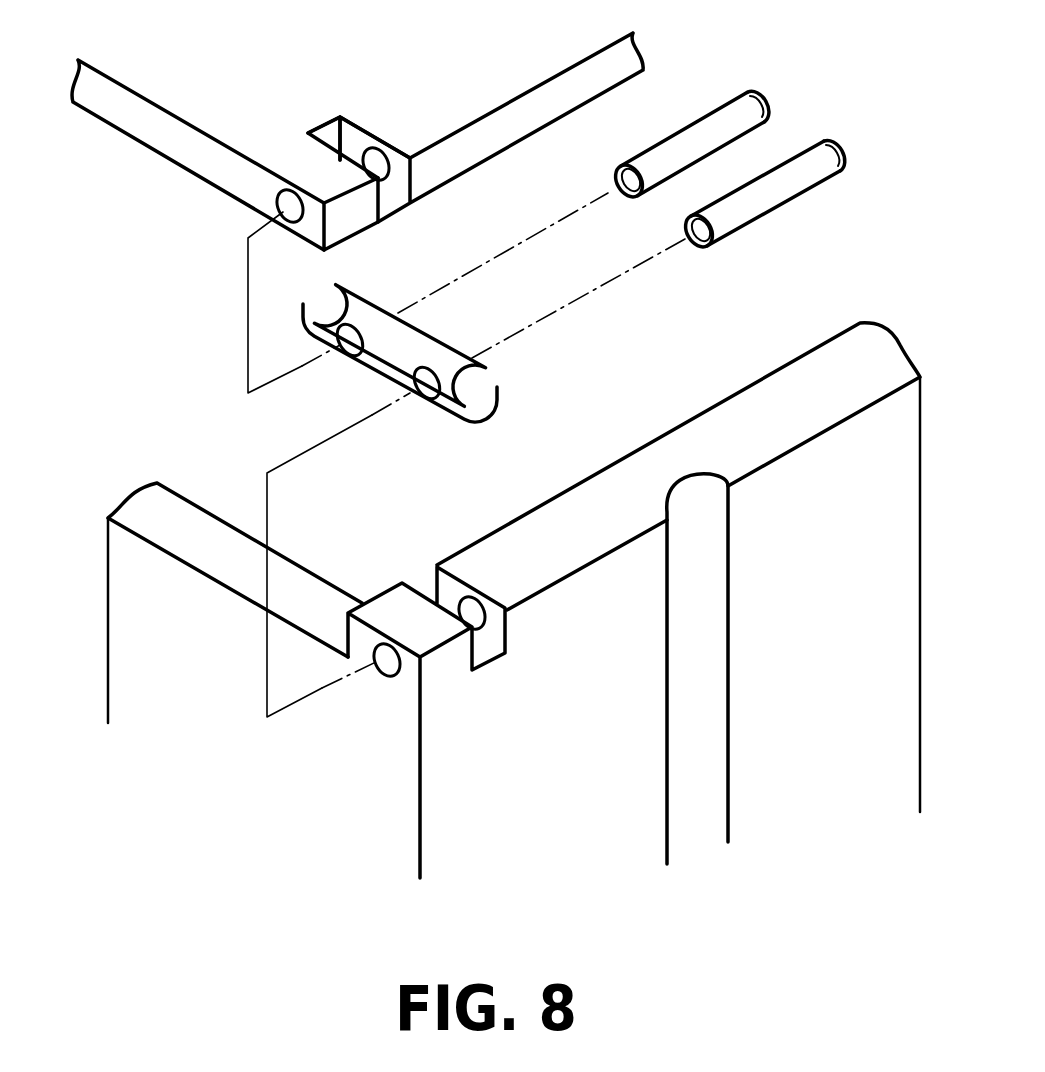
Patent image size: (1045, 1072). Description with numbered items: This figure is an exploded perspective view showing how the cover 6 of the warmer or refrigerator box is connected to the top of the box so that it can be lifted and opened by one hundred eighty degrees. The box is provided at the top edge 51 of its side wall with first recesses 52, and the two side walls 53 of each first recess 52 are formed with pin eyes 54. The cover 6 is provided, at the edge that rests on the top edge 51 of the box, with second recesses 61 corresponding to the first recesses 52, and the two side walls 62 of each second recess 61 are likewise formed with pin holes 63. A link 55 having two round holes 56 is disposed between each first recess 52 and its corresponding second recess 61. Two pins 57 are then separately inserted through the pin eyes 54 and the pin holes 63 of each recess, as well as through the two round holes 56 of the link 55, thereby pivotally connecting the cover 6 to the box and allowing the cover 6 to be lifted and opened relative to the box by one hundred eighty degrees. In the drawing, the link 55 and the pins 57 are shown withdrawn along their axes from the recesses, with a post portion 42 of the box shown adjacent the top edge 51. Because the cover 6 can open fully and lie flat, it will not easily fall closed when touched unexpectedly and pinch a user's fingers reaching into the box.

The cover 6 is at (150, 130).
The second recess 61 is at (332, 135).
The side wall of second recess 62 is at (355, 138).
The pin hole 63 is at (287, 202).
The pin 57 is at (838, 142).
The link 55 is at (447, 359).
The round hole 56 is at (356, 349).
The top edge 51 is at (514, 600).
The side wall of first recess 53 is at (443, 583).
The first recess 52 is at (483, 657).
The pin eye 54 is at (390, 658).
The post 42 is at (703, 518).